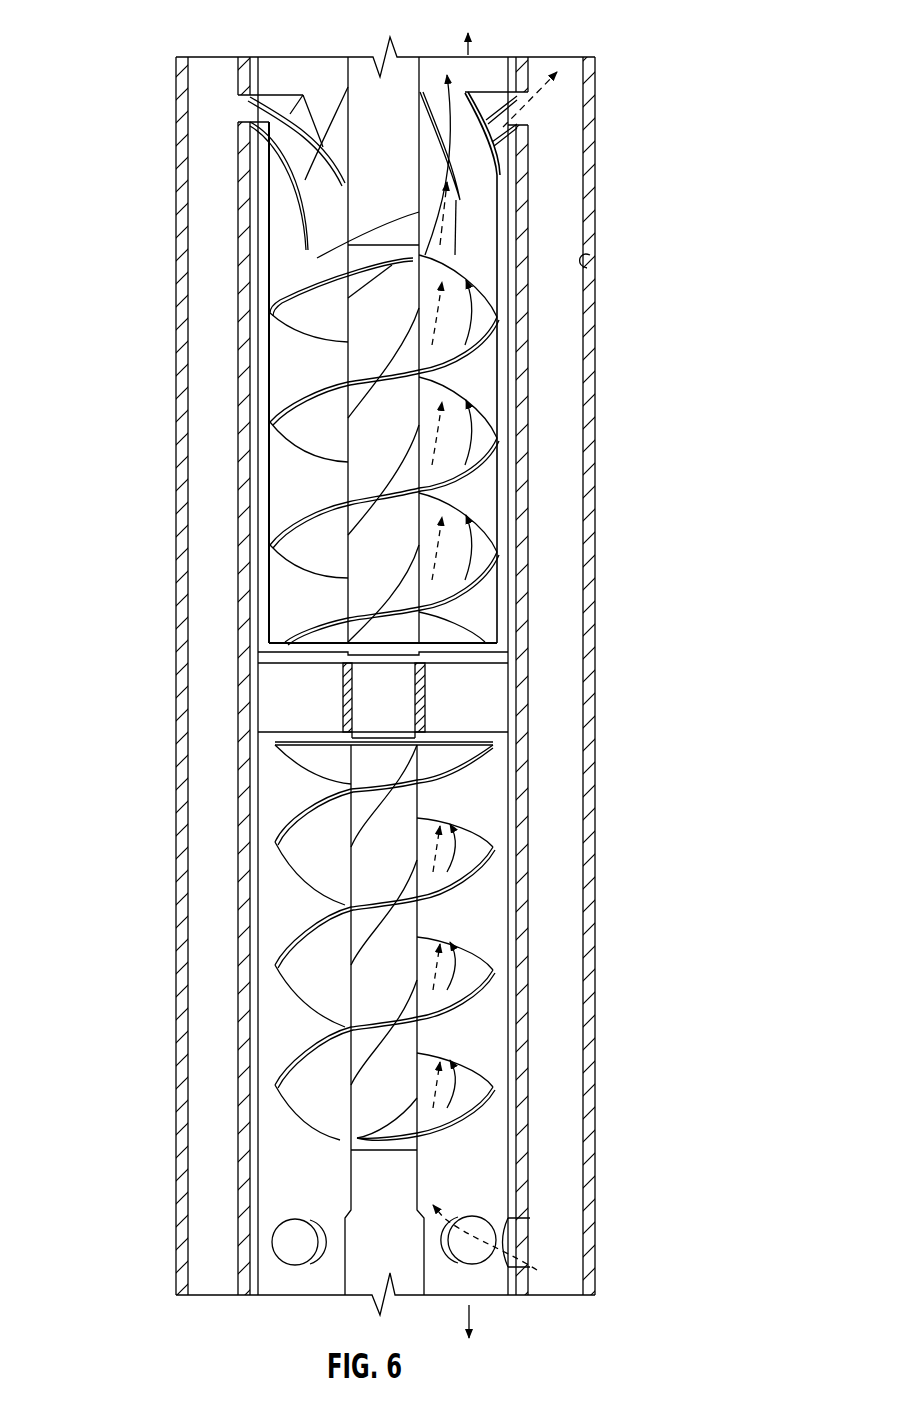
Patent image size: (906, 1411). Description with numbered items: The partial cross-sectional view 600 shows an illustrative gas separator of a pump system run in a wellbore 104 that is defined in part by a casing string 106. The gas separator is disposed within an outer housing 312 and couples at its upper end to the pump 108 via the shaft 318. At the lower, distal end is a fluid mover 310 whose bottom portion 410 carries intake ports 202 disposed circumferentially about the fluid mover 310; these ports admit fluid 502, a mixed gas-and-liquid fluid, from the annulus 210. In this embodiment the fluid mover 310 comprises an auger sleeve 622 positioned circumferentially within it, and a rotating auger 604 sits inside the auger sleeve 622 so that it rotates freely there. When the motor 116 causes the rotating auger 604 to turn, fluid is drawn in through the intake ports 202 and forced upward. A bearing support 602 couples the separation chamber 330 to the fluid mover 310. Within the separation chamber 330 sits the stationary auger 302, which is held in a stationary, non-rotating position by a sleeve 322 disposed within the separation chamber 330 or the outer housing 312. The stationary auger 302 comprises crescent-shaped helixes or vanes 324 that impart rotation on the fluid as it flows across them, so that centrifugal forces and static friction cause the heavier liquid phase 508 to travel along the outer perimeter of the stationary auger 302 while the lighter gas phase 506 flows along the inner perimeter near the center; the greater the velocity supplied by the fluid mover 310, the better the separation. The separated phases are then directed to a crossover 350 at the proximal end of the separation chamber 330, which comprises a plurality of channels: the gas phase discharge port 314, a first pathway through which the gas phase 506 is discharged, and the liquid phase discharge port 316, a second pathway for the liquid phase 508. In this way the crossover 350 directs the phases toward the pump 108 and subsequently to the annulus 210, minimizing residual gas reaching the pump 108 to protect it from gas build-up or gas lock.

The partial cross-sectional view 600 is at (150, 40).
The wellbore 104 is at (597, 322).
The casing string 106 is at (587, 268).
The pump 108 is at (470, 50).
The motor 116 is at (469, 1317).
The intake ports 202 is at (480, 1255).
The annulus 210 is at (563, 812).
The stationary auger 302 is at (466, 457).
The fluid mover 310 is at (663, 735).
The outer housing 312 is at (527, 877).
The gas phase discharge port 314 is at (262, 117).
The liquid phase discharge port 316 is at (283, 193).
The shaft 318 is at (343, 75).
The sleeve 322 is at (265, 466).
The helixes or vanes 324 is at (478, 422).
The separation chamber 330 is at (268, 384).
The crossover 350 is at (307, 232).
The bottom portion 410 is at (273, 1207).
The fluid 502 is at (533, 1253).
The gas phase 506 is at (452, 563).
The liquid phase 508 is at (478, 530).
The bearing support 602 is at (343, 683).
The rotating auger 604 is at (303, 1018).
The auger sleeve 622 is at (268, 1075).